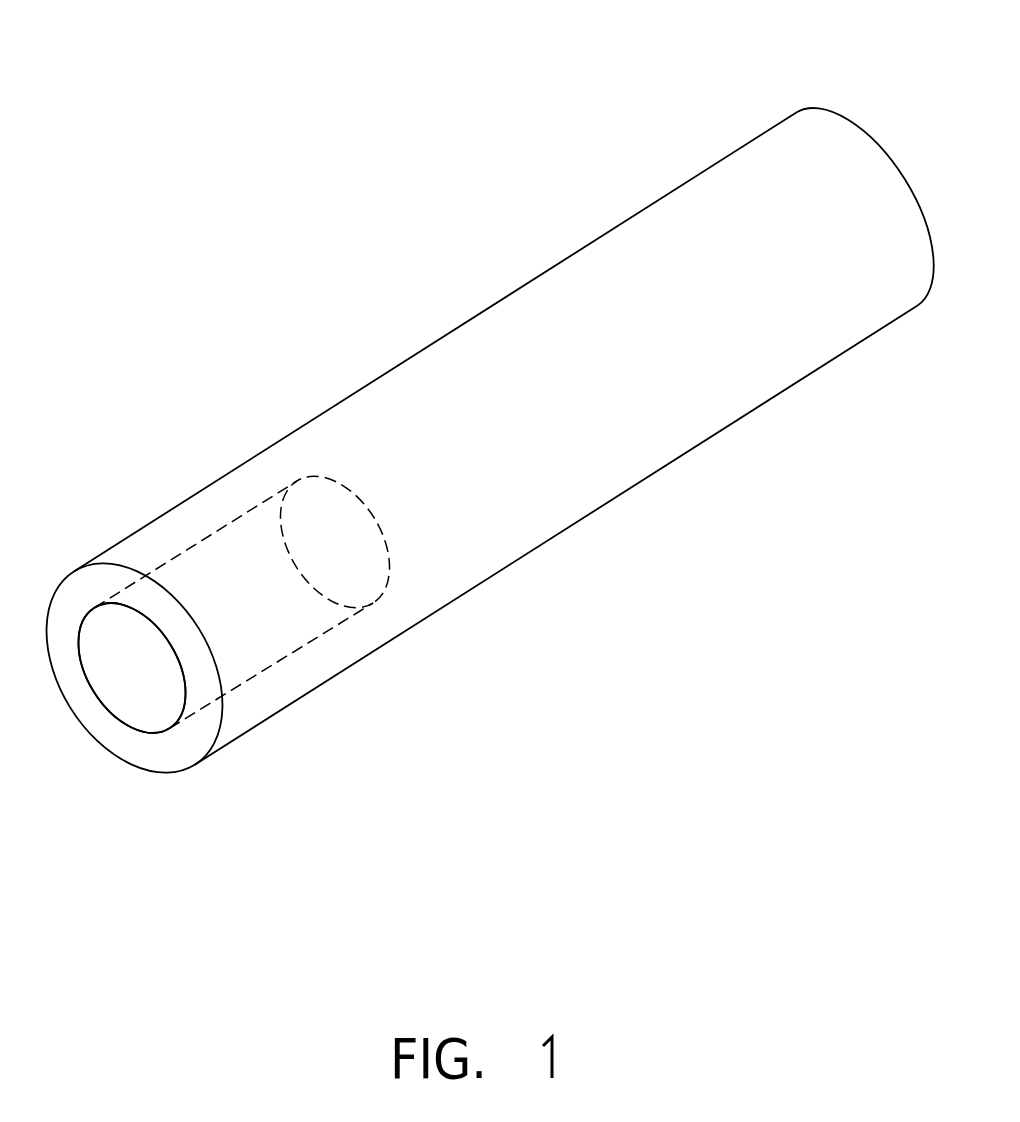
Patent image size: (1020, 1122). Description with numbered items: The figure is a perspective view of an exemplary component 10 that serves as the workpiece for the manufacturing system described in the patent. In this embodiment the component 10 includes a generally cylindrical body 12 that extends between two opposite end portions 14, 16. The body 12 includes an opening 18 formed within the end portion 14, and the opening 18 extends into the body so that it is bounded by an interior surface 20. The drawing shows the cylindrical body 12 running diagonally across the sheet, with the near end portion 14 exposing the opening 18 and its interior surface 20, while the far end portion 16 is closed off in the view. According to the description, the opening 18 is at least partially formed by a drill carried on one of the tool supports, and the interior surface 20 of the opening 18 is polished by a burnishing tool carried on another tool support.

The component 10 is at (241, 218).
The body 12 is at (465, 320).
The end portion 14 is at (203, 770).
The end portion 16 is at (818, 108).
The opening 18 is at (88, 615).
The interior surface 20 is at (145, 715).